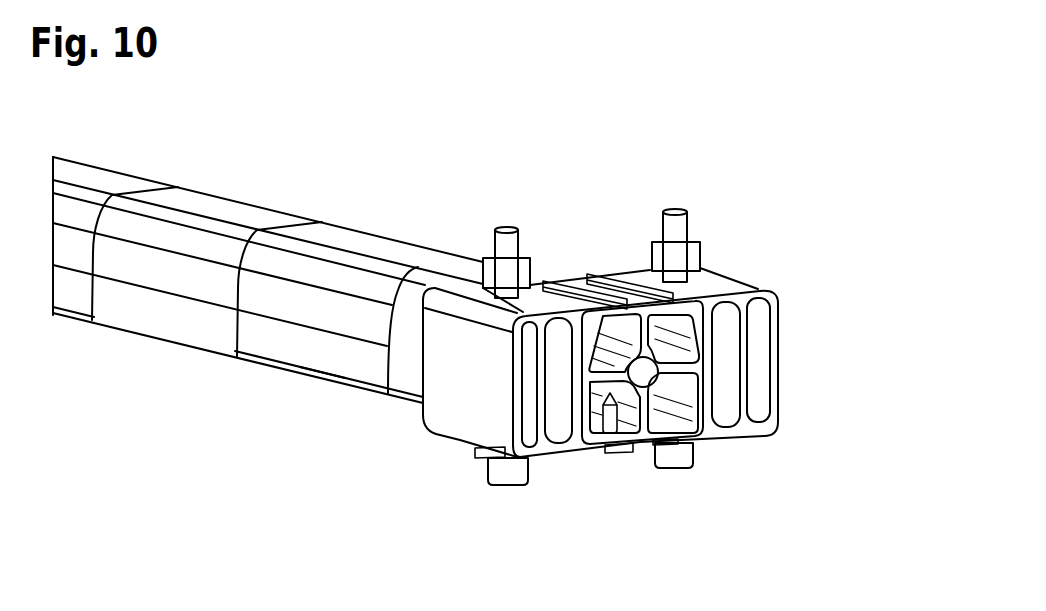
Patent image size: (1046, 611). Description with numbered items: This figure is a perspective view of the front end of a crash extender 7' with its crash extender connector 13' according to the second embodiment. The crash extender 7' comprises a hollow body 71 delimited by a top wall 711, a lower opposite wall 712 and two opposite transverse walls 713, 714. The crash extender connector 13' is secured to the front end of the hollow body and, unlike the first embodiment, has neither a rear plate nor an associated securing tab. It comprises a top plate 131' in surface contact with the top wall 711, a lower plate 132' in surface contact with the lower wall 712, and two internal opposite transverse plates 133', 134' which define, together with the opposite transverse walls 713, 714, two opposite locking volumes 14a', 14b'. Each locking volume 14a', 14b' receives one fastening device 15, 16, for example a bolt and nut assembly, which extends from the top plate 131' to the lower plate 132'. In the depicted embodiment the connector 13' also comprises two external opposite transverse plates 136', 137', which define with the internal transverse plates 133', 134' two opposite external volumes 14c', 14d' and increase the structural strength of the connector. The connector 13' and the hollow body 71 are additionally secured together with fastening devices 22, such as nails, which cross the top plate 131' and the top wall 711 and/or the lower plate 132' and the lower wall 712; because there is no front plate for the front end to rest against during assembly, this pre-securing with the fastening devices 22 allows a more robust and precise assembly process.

The crash extender 7' is at (282, 309).
The hollow body 71 is at (296, 216).
The top wall 711 is at (428, 266).
The lower wall 712 is at (323, 378).
The transverse wall 713 is at (205, 313).
The crash extender connector 13' is at (664, 368).
The top plate 131' is at (620, 258).
The lower plate 132' is at (638, 484).
The internal transverse plate 133' is at (517, 438).
The internal transverse plate 134' is at (802, 380).
The external transverse plate 136' is at (437, 393).
The external transverse plate 137' is at (821, 363).
The locking volume 14a' is at (572, 438).
The locking volume 14b' is at (781, 382).
The external volume 14c' is at (486, 429).
The external volume 14d' is at (820, 360).
The transverse wall 714 is at (693, 325).
The fastening device 15 is at (690, 243).
The fastening device 16 is at (518, 257).
The fastening device 22 is at (627, 292).